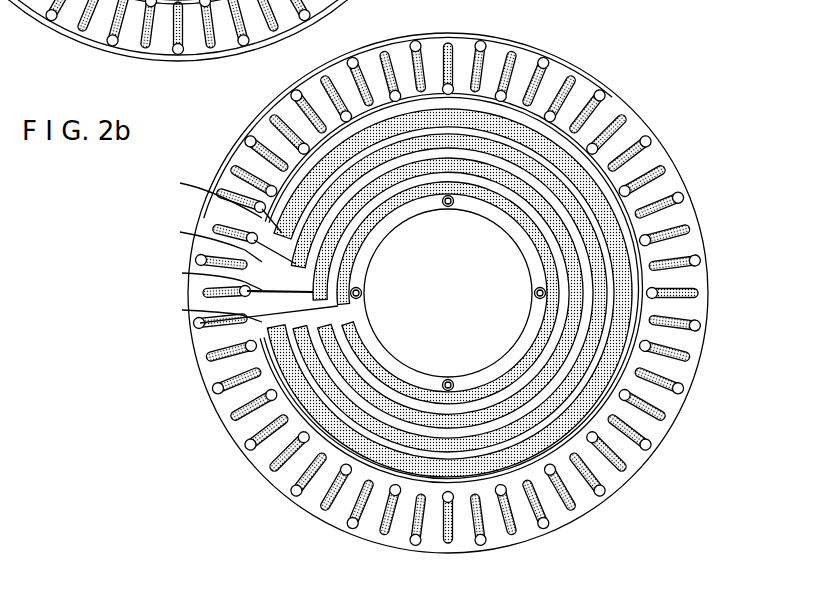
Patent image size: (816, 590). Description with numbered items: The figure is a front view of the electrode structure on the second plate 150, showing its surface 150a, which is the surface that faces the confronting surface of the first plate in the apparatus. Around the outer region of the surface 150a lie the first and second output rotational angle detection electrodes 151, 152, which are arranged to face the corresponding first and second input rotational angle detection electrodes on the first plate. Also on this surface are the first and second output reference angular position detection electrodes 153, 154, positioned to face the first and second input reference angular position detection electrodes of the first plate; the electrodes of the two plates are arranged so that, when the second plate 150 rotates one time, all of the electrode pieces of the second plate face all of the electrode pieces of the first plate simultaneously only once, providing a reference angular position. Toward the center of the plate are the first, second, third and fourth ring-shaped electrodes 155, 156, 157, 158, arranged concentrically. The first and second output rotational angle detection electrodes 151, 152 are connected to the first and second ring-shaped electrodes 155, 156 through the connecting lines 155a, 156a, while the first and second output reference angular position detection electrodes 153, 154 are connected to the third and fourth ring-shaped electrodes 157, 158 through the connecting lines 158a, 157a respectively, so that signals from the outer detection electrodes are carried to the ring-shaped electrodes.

The second plate 150 is at (607, 82).
The surface of the second plate 150a is at (625, 132).
The first output rotational angle detection electrode 151 is at (534, 60).
The second output rotational angle detection electrode 152 is at (523, 68).
The first output reference angular position detection electrode 153 is at (645, 143).
The second output reference angular position detection electrode 154 is at (667, 180).
The first ring-shaped electrode 155 is at (617, 230).
The second ring-shaped electrode 156 is at (603, 350).
The third ring-shaped electrode 157 is at (542, 387).
The fourth ring-shaped electrode 158 is at (503, 208).
The connecting line 155a is at (215, 200).
The connecting line 156a is at (212, 238).
The connecting line 157a is at (215, 283).
The connecting line 158a is at (205, 310).